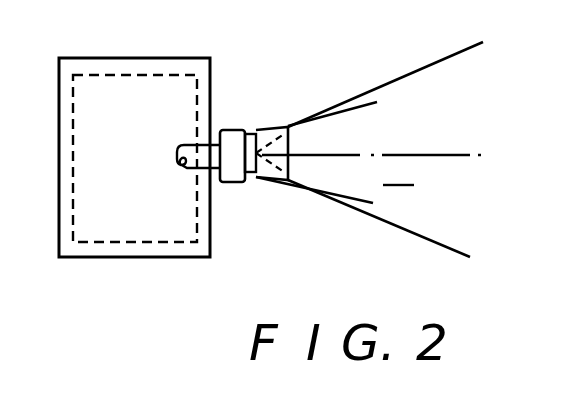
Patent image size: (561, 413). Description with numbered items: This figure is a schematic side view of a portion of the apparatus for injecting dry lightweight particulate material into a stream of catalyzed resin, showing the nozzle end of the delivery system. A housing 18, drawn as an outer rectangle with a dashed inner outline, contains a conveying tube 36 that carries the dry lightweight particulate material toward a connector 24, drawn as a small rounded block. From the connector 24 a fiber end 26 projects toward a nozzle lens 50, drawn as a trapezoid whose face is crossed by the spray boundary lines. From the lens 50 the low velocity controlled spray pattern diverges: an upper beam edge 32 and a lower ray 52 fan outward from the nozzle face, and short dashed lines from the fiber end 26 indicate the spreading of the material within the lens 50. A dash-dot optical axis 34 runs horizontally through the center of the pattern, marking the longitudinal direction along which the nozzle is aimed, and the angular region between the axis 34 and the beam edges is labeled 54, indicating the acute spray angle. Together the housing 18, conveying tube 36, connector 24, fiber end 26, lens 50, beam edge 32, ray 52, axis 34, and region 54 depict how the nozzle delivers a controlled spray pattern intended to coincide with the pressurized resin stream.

The housing 18 is at (163, 227).
The optical fiber 36 is at (186, 169).
The connector 24 is at (232, 130).
The fiber end / ferrule 26 is at (265, 133).
The lens 50 is at (300, 123).
The lower light ray 52 is at (293, 180).
The light beam 32 is at (407, 80).
The optical axis 34 is at (447, 155).
The beam angle region 54 is at (399, 171).